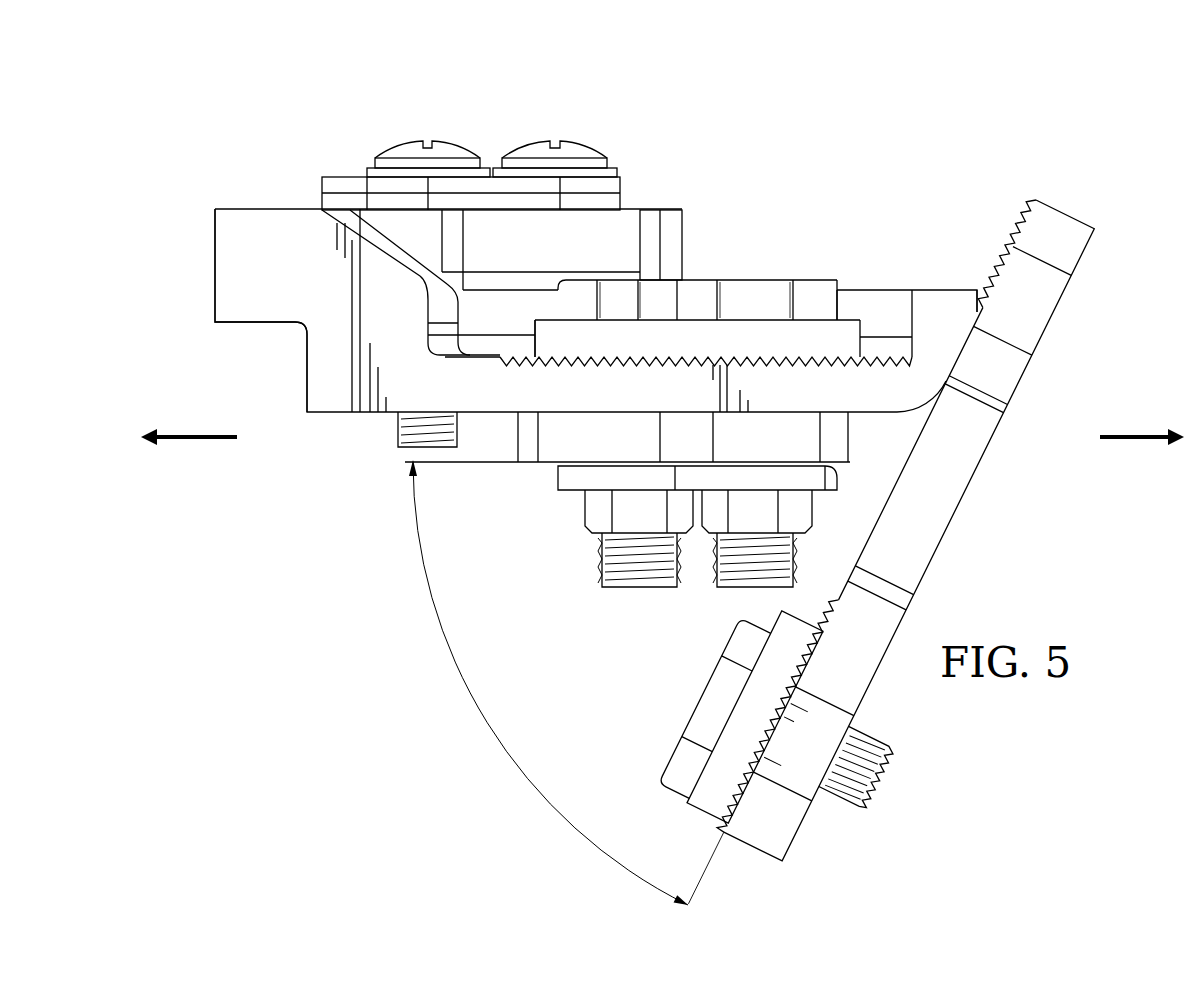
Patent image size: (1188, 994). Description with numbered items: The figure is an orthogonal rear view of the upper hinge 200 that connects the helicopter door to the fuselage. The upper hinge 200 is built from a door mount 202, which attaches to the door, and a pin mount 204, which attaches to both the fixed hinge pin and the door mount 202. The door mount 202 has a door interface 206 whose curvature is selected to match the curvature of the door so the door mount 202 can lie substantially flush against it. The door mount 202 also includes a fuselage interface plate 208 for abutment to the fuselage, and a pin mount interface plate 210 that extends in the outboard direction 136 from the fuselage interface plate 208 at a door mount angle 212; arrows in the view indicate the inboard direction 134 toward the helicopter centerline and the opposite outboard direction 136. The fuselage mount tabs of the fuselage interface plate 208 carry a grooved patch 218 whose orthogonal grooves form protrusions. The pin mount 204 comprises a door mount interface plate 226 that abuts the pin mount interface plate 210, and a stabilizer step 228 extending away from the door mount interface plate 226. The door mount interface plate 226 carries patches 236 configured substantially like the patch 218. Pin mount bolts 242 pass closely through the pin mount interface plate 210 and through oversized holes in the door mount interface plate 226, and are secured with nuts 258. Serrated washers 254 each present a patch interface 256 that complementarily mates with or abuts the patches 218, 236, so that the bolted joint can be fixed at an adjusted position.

The inboard direction 134 is at (1133, 432).
The outboard direction 136 is at (203, 445).
The upper hinge 200 is at (866, 106).
The door mount 202 is at (957, 490).
The pin mount 204 is at (317, 357).
The door interface 206 is at (932, 547).
The fuselage interface plate 208 is at (787, 813).
The pin mount interface plate 210 is at (553, 468).
The door mount angle 212 is at (500, 745).
The patch 218 is at (1025, 222).
The door mount interface plate 226 is at (887, 390).
The stabilizer step 228 is at (628, 212).
The patches 236 is at (520, 332).
The pin mount bolts 242 is at (652, 300).
The serrated washers 254 is at (553, 347).
The patch interface 256 is at (633, 330).
The nuts 258 is at (592, 535).